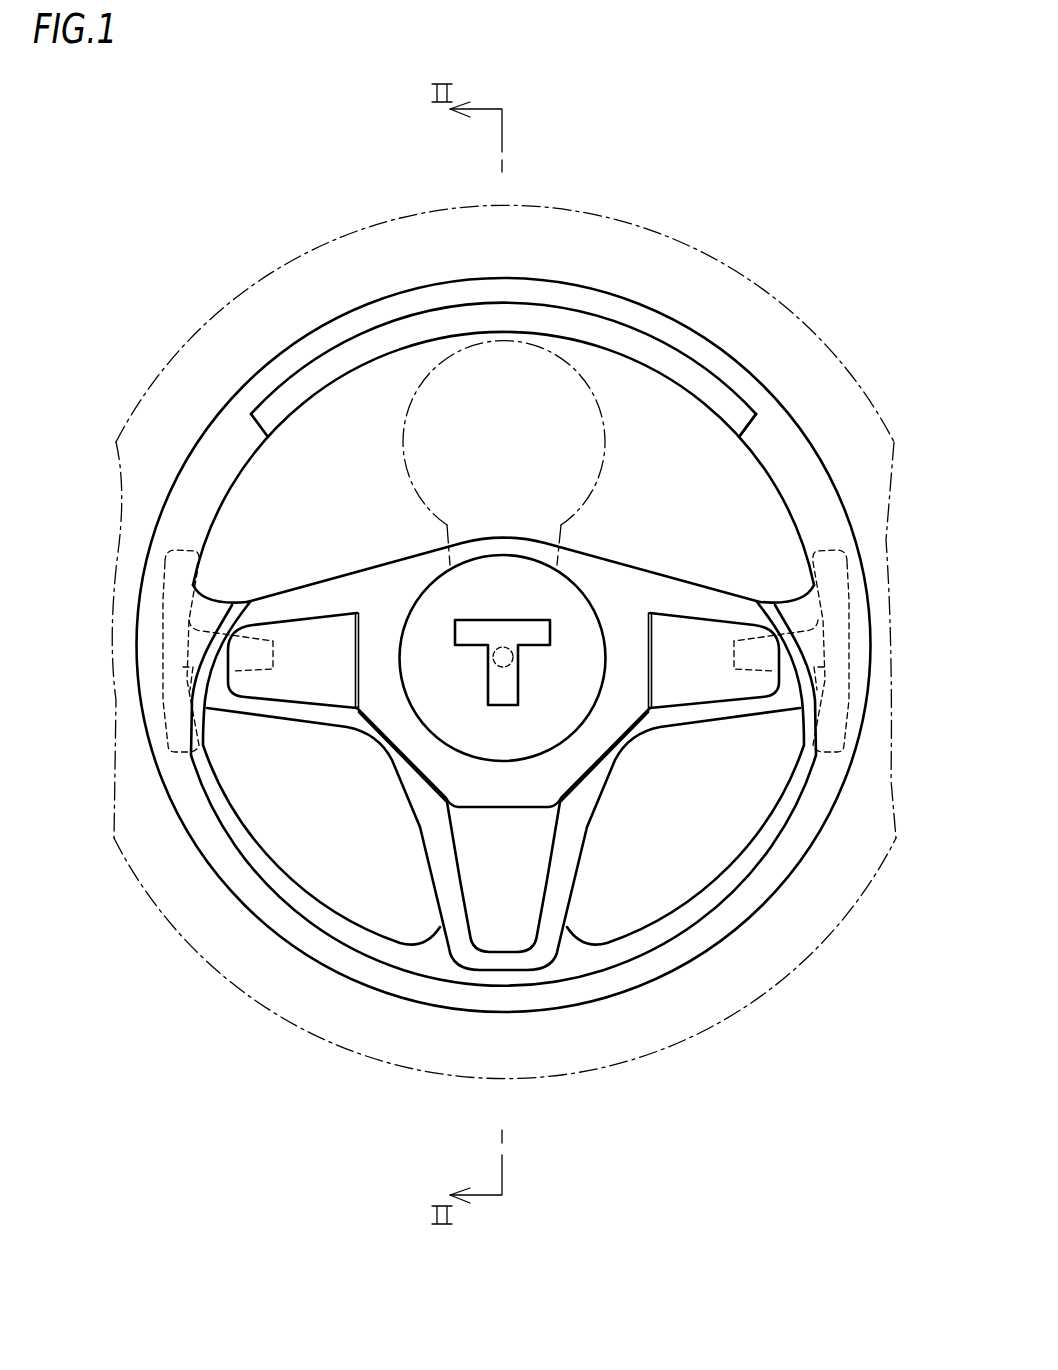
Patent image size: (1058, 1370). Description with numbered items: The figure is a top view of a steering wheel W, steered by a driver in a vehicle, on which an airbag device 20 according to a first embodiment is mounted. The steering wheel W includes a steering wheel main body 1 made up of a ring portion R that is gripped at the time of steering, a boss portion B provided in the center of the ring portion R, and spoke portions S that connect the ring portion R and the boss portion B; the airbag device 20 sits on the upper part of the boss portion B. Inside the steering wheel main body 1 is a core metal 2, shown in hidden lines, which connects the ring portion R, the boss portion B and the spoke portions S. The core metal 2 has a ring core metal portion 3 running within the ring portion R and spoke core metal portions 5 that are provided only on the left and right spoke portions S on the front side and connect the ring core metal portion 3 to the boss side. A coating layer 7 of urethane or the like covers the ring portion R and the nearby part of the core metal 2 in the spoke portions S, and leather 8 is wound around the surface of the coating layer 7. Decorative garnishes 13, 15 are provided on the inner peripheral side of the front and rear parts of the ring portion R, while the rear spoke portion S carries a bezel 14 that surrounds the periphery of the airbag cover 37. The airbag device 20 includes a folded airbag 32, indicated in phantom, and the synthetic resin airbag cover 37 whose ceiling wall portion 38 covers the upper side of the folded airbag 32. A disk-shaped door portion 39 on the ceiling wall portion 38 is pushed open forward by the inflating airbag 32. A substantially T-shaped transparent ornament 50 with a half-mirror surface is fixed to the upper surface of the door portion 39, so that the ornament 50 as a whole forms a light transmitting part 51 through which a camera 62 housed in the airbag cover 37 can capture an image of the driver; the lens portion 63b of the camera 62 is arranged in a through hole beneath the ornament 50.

The steering wheel main body 1 is at (504, 565).
The core metal 2 is at (474, 674).
The ring core metal portion 3 is at (187, 594).
The spoke core metal portion 5 is at (253, 657).
The coating layer 7 is at (778, 427).
The leather 8 is at (797, 445).
The decorative garnish 13 is at (400, 333).
The bezel 14 is at (517, 937).
The decorative garnish 15 is at (653, 937).
The airbag device 20 is at (607, 553).
The airbag 32 is at (705, 272).
The airbag cover 37 is at (310, 593).
The ceiling wall portion 38 is at (392, 628).
The door portion 39 is at (508, 583).
The ornament 50 is at (545, 632).
The light transmitting part 51 is at (508, 638).
The camera 62 is at (513, 665).
The lens portion 63b is at (599, 742).
The steering wheel W is at (290, 207).
The ring portion R is at (504, 438).
The boss portion B is at (397, 557).
The spoke portion S is at (294, 730).